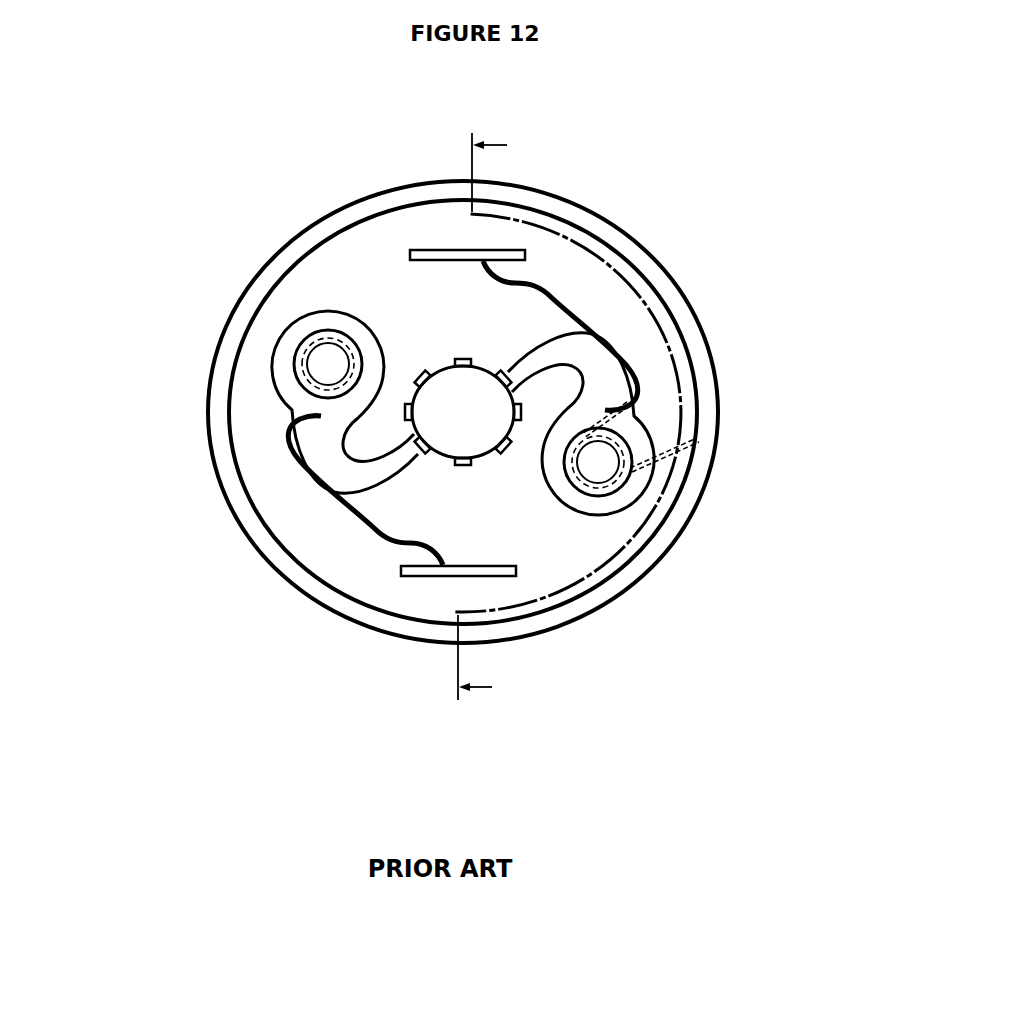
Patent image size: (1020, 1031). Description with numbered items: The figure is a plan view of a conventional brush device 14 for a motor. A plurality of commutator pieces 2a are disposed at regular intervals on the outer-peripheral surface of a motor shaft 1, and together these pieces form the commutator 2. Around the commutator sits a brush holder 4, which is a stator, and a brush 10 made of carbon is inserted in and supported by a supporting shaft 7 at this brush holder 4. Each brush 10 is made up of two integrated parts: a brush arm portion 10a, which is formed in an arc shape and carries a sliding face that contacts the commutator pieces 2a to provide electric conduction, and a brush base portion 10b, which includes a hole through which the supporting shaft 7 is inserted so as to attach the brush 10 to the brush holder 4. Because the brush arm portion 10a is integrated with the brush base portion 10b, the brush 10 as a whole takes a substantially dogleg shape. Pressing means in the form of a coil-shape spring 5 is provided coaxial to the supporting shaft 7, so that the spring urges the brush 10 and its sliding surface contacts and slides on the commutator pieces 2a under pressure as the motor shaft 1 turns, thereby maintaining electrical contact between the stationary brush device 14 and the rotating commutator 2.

The motor shaft 1 is at (463, 413).
The commutator 2 is at (449, 340).
The commutator pieces 2a is at (417, 373).
The brush holder 4 is at (288, 576).
The coil-shape spring 5 is at (680, 441).
The supporting shaft 7 is at (328, 363).
The brush 10 is at (312, 316).
The brush arm portion 10a is at (534, 360).
The brush base portion 10b is at (637, 435).
The brush device 14 is at (696, 210).